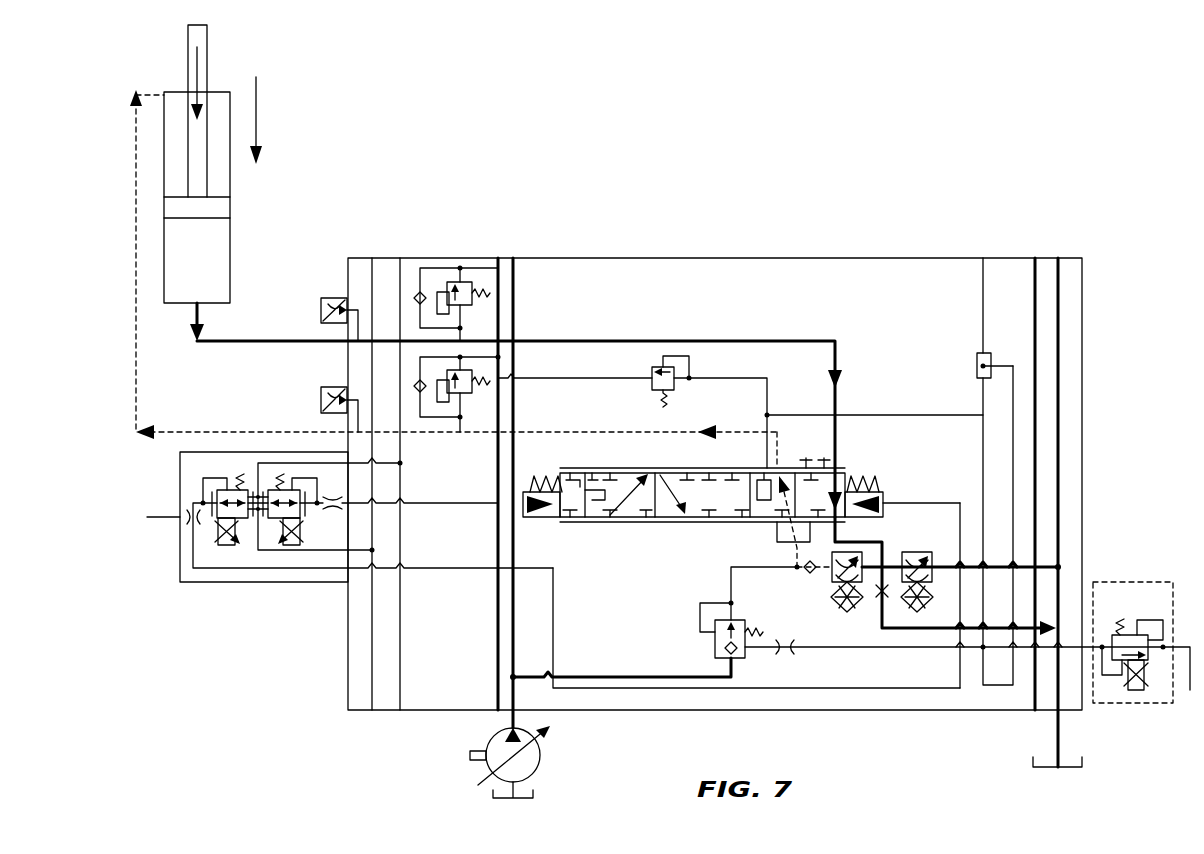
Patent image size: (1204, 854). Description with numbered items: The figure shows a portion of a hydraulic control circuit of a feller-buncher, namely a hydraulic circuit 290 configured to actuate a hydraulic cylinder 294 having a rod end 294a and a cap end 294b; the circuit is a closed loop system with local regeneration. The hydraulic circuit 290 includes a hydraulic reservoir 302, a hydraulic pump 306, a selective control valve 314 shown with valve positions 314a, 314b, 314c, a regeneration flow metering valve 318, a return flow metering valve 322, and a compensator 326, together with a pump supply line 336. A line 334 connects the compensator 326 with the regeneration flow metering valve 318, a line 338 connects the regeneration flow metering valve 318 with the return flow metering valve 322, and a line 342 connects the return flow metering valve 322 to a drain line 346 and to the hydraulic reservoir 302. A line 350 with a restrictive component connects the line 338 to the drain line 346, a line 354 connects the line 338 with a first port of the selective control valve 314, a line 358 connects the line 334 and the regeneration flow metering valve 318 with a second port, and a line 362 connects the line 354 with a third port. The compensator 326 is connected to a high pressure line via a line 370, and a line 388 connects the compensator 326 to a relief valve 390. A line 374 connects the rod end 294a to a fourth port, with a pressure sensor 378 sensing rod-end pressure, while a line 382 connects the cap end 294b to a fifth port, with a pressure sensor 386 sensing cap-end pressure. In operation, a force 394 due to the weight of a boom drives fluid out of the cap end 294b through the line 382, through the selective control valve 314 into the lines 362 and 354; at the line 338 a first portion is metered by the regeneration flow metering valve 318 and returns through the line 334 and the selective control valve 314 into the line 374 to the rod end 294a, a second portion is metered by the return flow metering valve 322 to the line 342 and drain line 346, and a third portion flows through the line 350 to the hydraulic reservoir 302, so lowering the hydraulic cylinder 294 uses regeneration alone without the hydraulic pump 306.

The hydraulic circuit 290 is at (426, 146).
The hydraulic cylinder 294 is at (248, 216).
The rod end 294a is at (166, 92).
The cap end 294b is at (215, 305).
The hydraulic reservoir 302 is at (1042, 768).
The hydraulic pump 306 is at (520, 799).
The selective control valve 314 is at (852, 448).
The first valve position 314a is at (604, 458).
The second valve position 314b is at (693, 458).
The third valve position 314c is at (806, 452).
The regeneration flow metering valve 318 is at (830, 570).
The return flow metering valve 322 is at (943, 550).
The compensator 326 is at (713, 650).
The line 334 is at (730, 582).
The pump supply line 336 is at (512, 612).
The line 338 is at (870, 583).
The line 342 is at (1012, 550).
The drain line 346 is at (1060, 432).
The line 350 is at (910, 632).
The line 354 is at (865, 542).
The line 358 is at (790, 548).
The line 362 is at (846, 530).
The line 370 is at (590, 675).
The line 374 is at (492, 436).
The pressure sensor 378 is at (334, 387).
The line 382 is at (617, 341).
The pressure sensor 386 is at (334, 297).
The line 388 is at (932, 652).
The relief valve 390 is at (1122, 705).
The force 394 is at (200, 72).